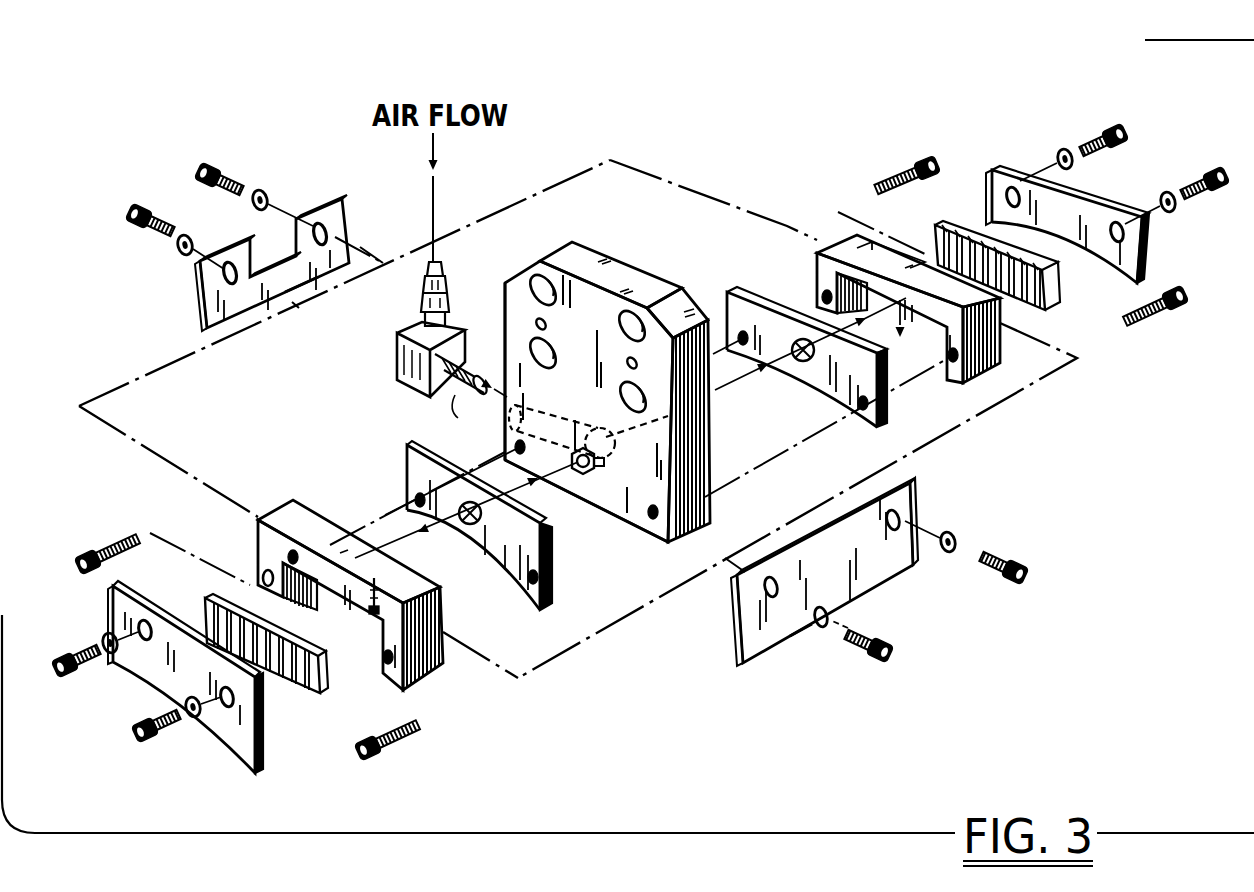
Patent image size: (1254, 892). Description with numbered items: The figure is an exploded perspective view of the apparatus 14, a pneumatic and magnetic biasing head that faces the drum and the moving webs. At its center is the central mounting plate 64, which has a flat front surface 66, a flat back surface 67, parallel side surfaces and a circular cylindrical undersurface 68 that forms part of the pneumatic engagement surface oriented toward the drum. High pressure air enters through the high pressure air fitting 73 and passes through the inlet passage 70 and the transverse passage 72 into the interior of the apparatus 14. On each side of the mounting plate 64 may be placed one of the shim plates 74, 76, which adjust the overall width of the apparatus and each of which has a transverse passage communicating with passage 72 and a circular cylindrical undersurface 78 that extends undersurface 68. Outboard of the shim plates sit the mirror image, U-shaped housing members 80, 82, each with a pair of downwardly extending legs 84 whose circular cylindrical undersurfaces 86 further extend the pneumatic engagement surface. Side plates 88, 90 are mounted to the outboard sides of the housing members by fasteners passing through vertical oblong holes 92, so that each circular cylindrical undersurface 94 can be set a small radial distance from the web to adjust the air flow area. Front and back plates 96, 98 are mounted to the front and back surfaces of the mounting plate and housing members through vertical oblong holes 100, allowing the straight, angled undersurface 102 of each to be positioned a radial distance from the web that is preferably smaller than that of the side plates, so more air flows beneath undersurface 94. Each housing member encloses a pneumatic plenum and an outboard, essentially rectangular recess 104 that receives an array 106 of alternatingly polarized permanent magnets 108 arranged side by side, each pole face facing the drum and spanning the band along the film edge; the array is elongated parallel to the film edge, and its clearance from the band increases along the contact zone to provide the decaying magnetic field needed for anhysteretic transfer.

The apparatus 14 is at (628, 682).
The central mounting plate 64 is at (648, 284).
The flat front surface 66 is at (712, 438).
The flat back surface 67 is at (497, 284).
The circular cylindrical undersurface 68 is at (655, 536).
The inlet passage 70 is at (590, 428).
The transverse passage 72 is at (582, 478).
The high pressure air fitting 73 is at (445, 284).
The shim plate 74 is at (403, 466).
The shim plate 76 is at (727, 290).
The circular cylindrical undersurface 78 is at (497, 563).
The U-shaped housing member 80 is at (275, 508).
The U-shaped housing member 82 is at (838, 240).
The downwardly extending legs 84 is at (266, 562).
The circular cylindrical undersurface 86 is at (270, 588).
The side plate 88 is at (232, 740).
The side plate 90 is at (1093, 210).
The vertical oblong holes 92 is at (1016, 188).
The circular cylindrical undersurface 94 is at (1138, 283).
The front plate 96 is at (883, 586).
The back plate 98 is at (336, 222).
The vertical oblong holes 100 is at (203, 285).
The straight angled undersurface 102 is at (305, 302).
The rectangular recess 104 is at (370, 620).
The array of permanent magnets 106 is at (296, 696).
The permanent magnet 108 is at (203, 612).